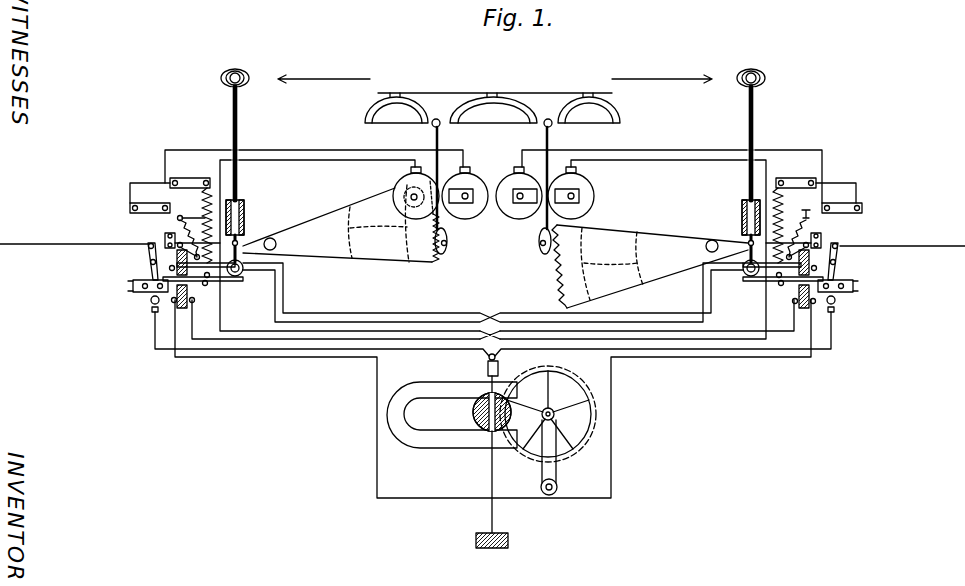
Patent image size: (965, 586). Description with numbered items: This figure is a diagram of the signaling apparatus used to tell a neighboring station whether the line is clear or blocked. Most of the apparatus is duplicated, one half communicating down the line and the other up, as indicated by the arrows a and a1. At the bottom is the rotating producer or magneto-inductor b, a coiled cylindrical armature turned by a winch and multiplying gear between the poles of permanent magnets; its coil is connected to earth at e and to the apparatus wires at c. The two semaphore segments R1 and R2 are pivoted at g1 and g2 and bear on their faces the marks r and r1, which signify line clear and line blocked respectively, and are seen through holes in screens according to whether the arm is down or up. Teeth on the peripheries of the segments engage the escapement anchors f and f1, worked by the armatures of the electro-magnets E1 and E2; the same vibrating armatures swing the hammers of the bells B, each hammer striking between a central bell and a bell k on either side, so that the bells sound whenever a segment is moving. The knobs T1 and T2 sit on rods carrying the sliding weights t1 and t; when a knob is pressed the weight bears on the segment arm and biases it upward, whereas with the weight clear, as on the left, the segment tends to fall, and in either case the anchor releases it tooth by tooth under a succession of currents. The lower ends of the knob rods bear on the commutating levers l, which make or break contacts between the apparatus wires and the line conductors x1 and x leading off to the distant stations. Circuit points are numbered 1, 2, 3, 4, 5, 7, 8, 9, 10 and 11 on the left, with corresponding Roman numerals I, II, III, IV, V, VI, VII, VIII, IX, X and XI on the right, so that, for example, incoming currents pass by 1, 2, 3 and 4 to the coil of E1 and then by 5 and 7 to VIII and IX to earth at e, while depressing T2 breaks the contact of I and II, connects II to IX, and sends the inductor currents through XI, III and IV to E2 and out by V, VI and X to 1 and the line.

The knob T1 is at (235, 128).
The knob T2 is at (751, 124).
The arrow a is at (324, 72).
The arrow a1 is at (662, 71).
The bells B is at (495, 84).
The bells k is at (492, 108).
The electro-magnet E1 is at (440, 193).
The electro-magnet E2 is at (545, 193).
The escapement-anchor f is at (445, 241).
The escapement-anchor f1 is at (539, 239).
The sliding weight t1 is at (240, 238).
The sliding weight t is at (746, 238).
The semaphore arm or segment R1 is at (341, 221).
The semaphore arm or segment R2 is at (650, 266).
The upper signal mark r is at (495, 242).
The lower signal mark r1 is at (496, 262).
The left pivot g1 is at (273, 241).
The right pivot g2 is at (716, 242).
The circuit point 4 is at (171, 214).
The circuit point 5 is at (192, 229).
The circuit point 7 is at (187, 239).
The circuit point 1 is at (148, 261).
The left contact 10 is at (164, 264).
The left link 8 is at (189, 246).
The commutating-lever l is at (493, 281).
The left beam contacts 9 is at (186, 290).
The circuit point 2 is at (148, 286).
The left terminal 11 is at (149, 303).
The circuit point 3 is at (195, 302).
The circuit point IV is at (817, 215).
The circuit point V is at (800, 227).
The right contact plate VII is at (800, 240).
The circuit point I is at (836, 261).
The circuit point X is at (820, 264).
The circuit point VI is at (798, 251).
The circuit point III is at (777, 284).
The circuit point II is at (838, 286).
The circuit point XI is at (836, 304).
The circuit point VIII is at (785, 302).
The circuit point IX is at (816, 307).
The connection to apparatus wires c is at (493, 353).
The rotating producer or magneto-inductor b is at (452, 415).
The earth connection e is at (497, 489).
The guide line right x is at (893, 258).
The guide line left x1 is at (74, 235).